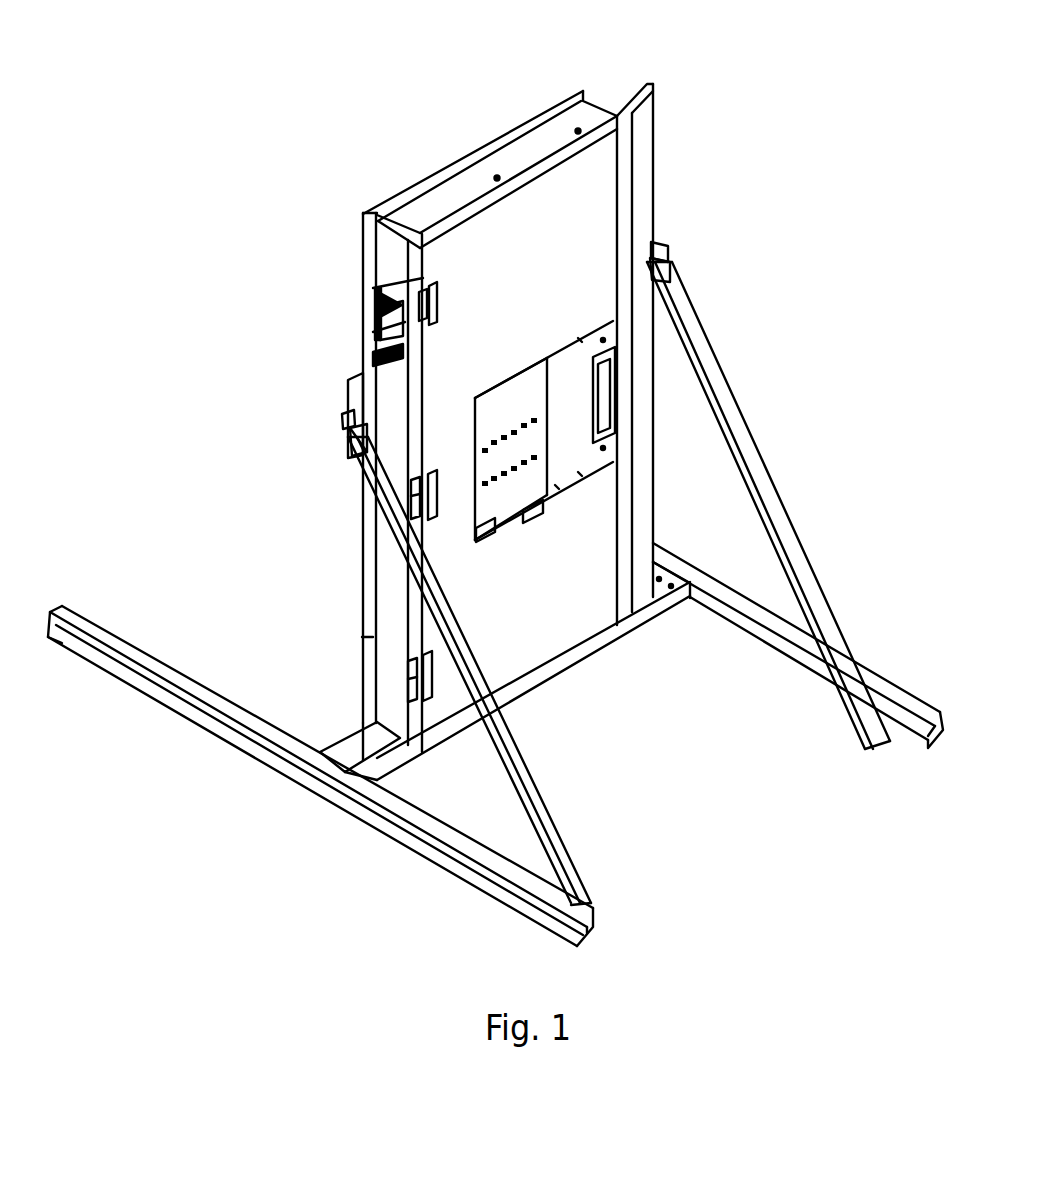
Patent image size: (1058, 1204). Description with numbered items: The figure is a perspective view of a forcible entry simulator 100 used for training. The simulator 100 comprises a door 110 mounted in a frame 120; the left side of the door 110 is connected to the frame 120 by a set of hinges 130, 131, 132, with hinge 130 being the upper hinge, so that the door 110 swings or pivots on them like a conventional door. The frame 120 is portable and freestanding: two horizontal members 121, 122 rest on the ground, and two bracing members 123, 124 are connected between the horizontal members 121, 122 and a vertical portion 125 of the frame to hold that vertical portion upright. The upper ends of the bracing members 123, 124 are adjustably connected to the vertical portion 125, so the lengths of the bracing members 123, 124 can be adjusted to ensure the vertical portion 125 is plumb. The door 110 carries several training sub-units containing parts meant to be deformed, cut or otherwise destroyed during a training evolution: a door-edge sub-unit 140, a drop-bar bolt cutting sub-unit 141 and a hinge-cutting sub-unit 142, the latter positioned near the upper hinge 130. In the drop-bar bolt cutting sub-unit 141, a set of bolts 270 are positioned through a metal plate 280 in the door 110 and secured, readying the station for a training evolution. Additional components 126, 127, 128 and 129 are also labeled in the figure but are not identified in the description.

The simulator 100 is at (816, 70).
The door 110 is at (581, 226).
The frame 120 is at (471, 152).
The horizontal member 121 is at (485, 897).
The horizontal member 122 is at (905, 678).
The bracing member 123 is at (572, 850).
The bracing member 124 is at (871, 735).
The vertical portion 125 is at (360, 591).
The front brace bracket 126 is at (350, 458).
The rear brace bracket 127 is at (664, 272).
The front brace pin 128 is at (343, 420).
The rear brace pin 129 is at (658, 244).
The upper hinge 130 is at (438, 296).
The hinge 131 is at (437, 490).
The hinge 132 is at (432, 670).
The door-edge sub-unit 140 is at (593, 480).
The drop-bar bolt cutting sub-unit 141 is at (522, 366).
The hinge-cutting sub-unit 142 is at (357, 314).
The bolts 270 is at (492, 440).
The metal plate 280 is at (497, 390).